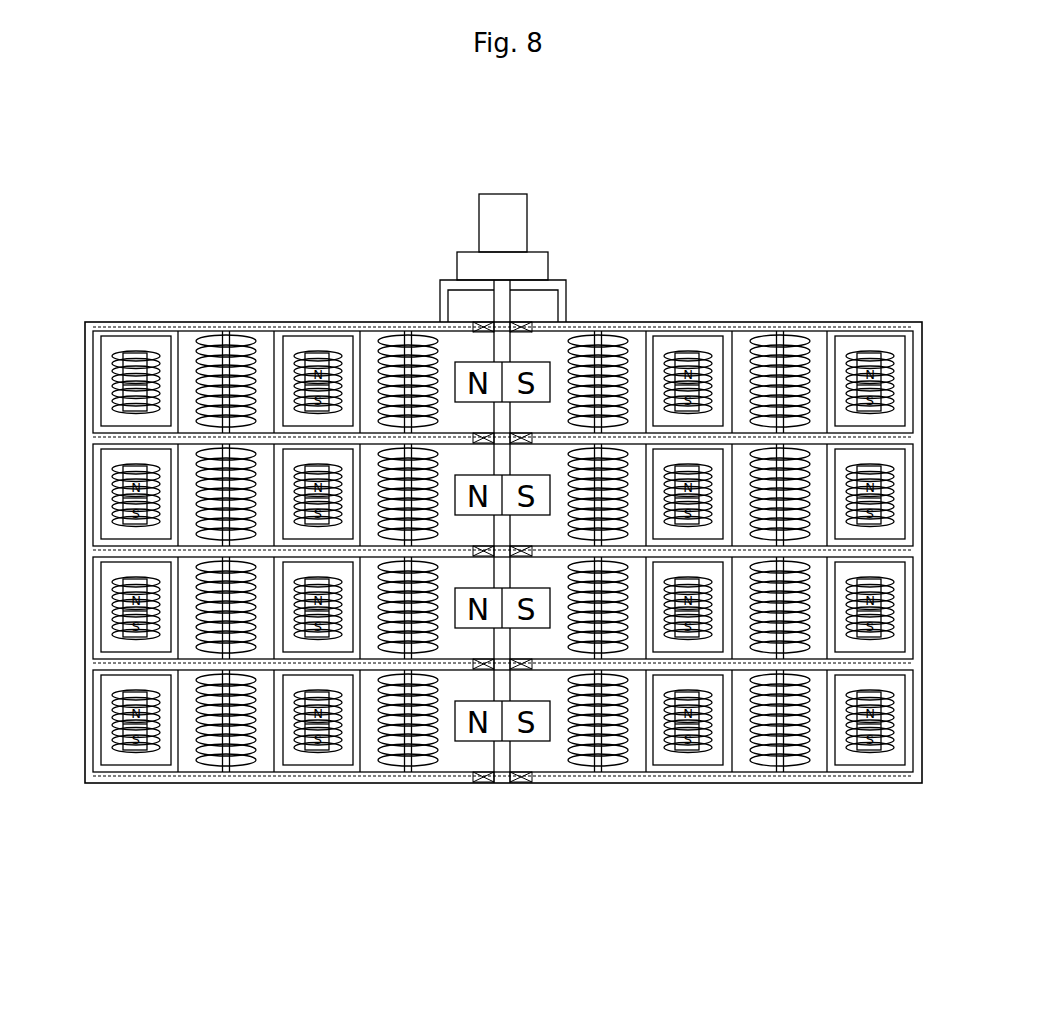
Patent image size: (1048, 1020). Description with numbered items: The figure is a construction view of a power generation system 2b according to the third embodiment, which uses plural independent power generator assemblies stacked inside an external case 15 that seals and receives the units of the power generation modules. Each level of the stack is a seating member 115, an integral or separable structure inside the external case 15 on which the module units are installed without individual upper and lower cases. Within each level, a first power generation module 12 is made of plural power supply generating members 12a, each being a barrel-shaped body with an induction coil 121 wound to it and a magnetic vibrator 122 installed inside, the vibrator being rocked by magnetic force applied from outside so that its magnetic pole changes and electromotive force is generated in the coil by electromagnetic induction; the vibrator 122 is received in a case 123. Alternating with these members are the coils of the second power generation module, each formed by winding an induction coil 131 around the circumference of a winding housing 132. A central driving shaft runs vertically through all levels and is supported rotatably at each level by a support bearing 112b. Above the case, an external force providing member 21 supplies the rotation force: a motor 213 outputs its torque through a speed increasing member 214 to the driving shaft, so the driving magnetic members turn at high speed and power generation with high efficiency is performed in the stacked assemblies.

The power generation system 2b is at (132, 63).
The first power generation module 12 is at (468, 450).
The power supply generating member 12a is at (192, 307).
The induction coil 121 is at (128, 353).
The magnetic vibrator 122 is at (157, 329).
The magnet case 123 is at (105, 336).
The induction coil 131 is at (386, 337).
The winding housing 132 is at (407, 337).
The external case 15 is at (842, 322).
The seating member 115 is at (902, 438).
The external force providing member 21 is at (588, 488).
The motor 213 is at (527, 222).
The speed increasing member 214 is at (548, 266).
The support bearing 112b is at (520, 783).